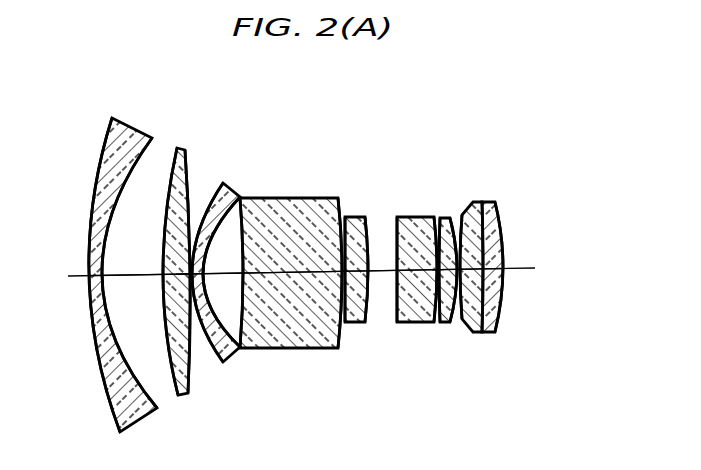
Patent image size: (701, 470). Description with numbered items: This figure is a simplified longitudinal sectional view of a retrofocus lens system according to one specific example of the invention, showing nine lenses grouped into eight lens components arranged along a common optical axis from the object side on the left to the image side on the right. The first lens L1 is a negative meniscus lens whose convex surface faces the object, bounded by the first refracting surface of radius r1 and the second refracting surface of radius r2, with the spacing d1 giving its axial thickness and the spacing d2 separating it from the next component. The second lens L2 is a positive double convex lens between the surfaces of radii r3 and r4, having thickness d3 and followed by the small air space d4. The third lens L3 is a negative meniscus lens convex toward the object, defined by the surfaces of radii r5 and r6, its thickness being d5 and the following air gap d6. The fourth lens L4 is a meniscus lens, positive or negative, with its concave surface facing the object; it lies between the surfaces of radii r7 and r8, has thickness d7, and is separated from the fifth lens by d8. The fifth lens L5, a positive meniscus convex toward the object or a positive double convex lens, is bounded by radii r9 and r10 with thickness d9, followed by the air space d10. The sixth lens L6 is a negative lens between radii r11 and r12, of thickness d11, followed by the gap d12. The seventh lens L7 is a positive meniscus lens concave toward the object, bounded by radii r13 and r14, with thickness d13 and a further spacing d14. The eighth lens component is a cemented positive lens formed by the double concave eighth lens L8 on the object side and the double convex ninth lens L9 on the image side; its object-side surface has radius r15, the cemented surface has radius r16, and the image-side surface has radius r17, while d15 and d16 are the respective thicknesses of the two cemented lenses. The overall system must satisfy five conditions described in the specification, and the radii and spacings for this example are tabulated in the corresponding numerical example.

The first lens L1 is at (121, 118).
The second lens L2 is at (180, 148).
The third lens L3 is at (228, 183).
The fourth lens L4 is at (299, 198).
The fifth lens L5 is at (358, 215).
The sixth lens L6 is at (408, 217).
The seventh lens L7 is at (448, 218).
The eighth lens L8 is at (492, 202).
The ninth lens L9 is at (500, 206).
The radius of curvature of first refracting surface r1 is at (112, 125).
The radius of curvature of second refracting surface r2 is at (152, 140).
The radius of curvature of third refracting surface r3 is at (176, 160).
The radius of curvature of fourth refracting surface r4 is at (187, 159).
The radius of curvature of fifth refracting surface r5 is at (218, 196).
The radius of curvature of sixth refracting surface r6 is at (239, 197).
The radius of curvature of seventh refracting surface r7 is at (255, 198).
The radius of curvature of eighth refracting surface r8 is at (338, 206).
The radius of curvature of ninth refracting surface r9 is at (345, 215).
The radius of curvature of tenth refracting surface r10 is at (367, 212).
The radius of curvature of eleventh refracting surface r11 is at (397, 226).
The radius of curvature of twelfth refracting surface r12 is at (435, 222).
The radius of curvature of thirteenth refracting surface r13 is at (442, 218).
The radius of curvature of fourteenth refracting surface r14 is at (455, 218).
The radius of curvature of fifteenth refracting surface r15 is at (463, 236).
The radius of curvature of sixteenth refracting surface r16 is at (483, 222).
The radius of curvature of seventeenth refracting surface r17 is at (500, 205).
The spacing between first and second lens surfaces d1 is at (90, 283).
The spacing between second and third lens surfaces d2 is at (121, 277).
The spacing between third and fourth lens surfaces d3 is at (166, 268).
The spacing between fourth and fifth lens surfaces d4 is at (173, 284).
The spacing between fifth and sixth lens surfaces d5 is at (205, 275).
The spacing between sixth and seventh lens surfaces d6 is at (217, 274).
The spacing between seventh and eighth lens surfaces d7 is at (270, 276).
The spacing between eighth and ninth lens surfaces d8 is at (338, 272).
The spacing between ninth and tenth lens surfaces d9 is at (342, 258).
The spacing between tenth and eleventh lens surfaces d10 is at (390, 273).
The spacing between eleventh and twelfth lens surfaces d11 is at (417, 292).
The spacing between twelfth and thirteenth lens surfaces d12 is at (437, 292).
The spacing between thirteenth and fourteenth lens surfaces d13 is at (453, 320).
The spacing between fourteenth and fifteenth lens surfaces d14 is at (475, 331).
The spacing between fifteenth and sixteenth lens surfaces d15 is at (494, 318).
The spacing between sixteenth and seventeenth lens surfaces d16 is at (505, 292).